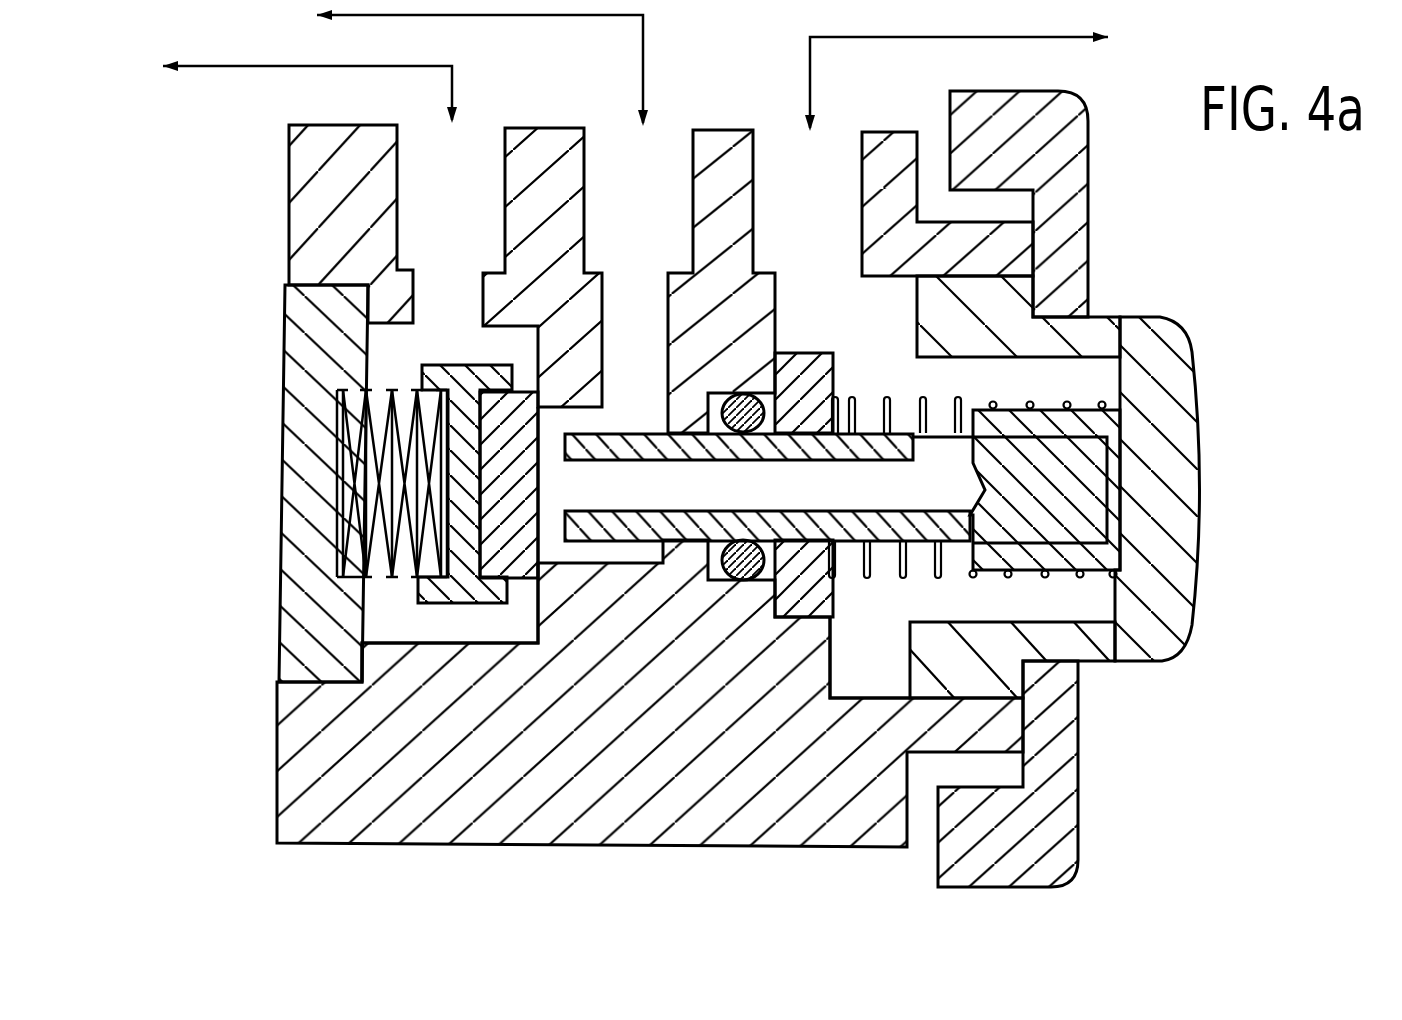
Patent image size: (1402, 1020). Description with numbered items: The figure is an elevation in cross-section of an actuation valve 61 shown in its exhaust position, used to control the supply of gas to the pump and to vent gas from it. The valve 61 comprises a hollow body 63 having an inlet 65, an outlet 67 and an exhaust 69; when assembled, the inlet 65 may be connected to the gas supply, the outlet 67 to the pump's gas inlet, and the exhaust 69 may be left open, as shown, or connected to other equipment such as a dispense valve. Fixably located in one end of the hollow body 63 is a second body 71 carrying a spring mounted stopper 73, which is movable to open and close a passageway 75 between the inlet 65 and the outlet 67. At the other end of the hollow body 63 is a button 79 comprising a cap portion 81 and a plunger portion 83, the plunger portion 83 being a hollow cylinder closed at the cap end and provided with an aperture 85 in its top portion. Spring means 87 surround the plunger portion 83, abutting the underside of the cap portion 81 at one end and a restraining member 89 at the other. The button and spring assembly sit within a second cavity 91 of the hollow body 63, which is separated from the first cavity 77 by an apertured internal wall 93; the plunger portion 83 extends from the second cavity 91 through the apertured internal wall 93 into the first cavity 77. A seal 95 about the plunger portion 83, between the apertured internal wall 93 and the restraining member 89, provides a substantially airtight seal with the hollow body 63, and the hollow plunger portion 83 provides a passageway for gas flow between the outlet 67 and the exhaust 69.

The actuation valve 61 is at (255, 787).
The hollow body 63 is at (405, 832).
The inlet 65 is at (455, 180).
The outlet 67 is at (646, 182).
The exhaust 69 is at (804, 190).
The second body 71 is at (290, 648).
The spring mounted stopper 73 is at (430, 586).
The passageway 75 is at (550, 444).
The first cavity 77 is at (398, 347).
The button 79 is at (1214, 600).
The cap portion 81 is at (1157, 635).
The plunger portion 83 is at (1100, 505).
The aperture 85 is at (937, 450).
The spring means 87 is at (937, 574).
The restraining member 89 is at (817, 600).
The second cavity 91 is at (870, 690).
The apertured internal wall 93 is at (685, 556).
The seal 95 is at (743, 540).